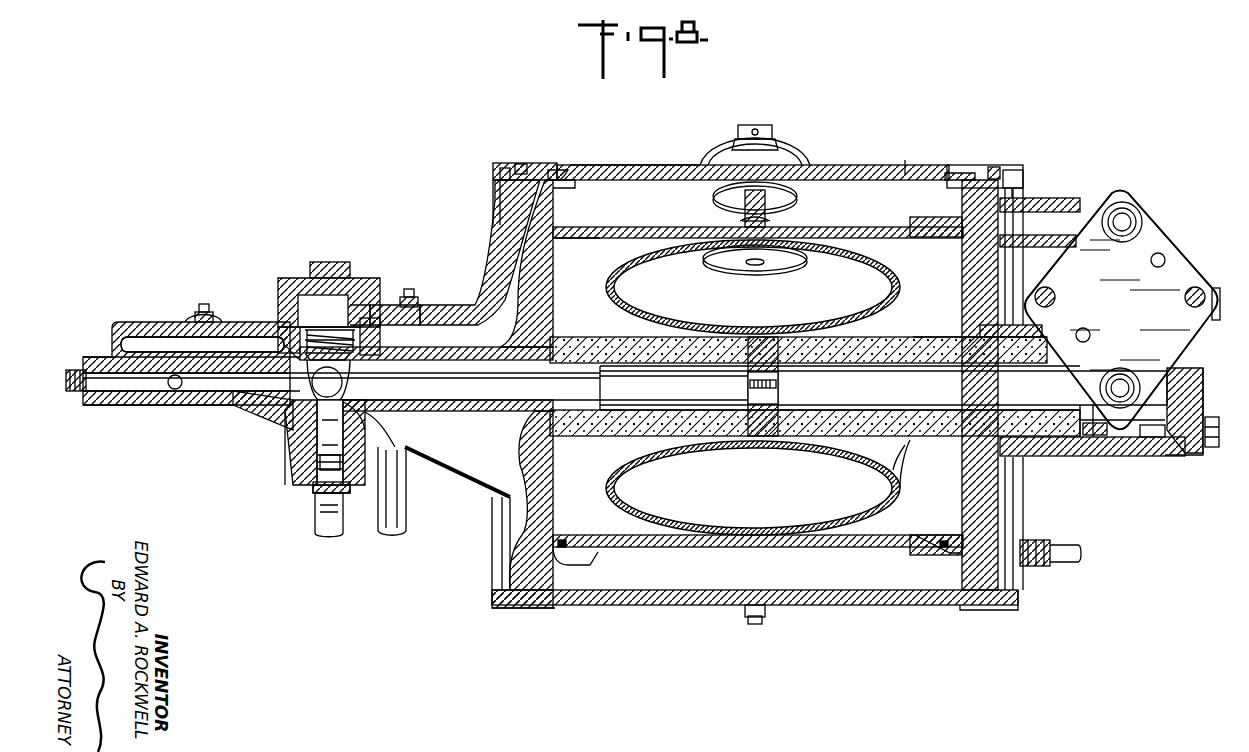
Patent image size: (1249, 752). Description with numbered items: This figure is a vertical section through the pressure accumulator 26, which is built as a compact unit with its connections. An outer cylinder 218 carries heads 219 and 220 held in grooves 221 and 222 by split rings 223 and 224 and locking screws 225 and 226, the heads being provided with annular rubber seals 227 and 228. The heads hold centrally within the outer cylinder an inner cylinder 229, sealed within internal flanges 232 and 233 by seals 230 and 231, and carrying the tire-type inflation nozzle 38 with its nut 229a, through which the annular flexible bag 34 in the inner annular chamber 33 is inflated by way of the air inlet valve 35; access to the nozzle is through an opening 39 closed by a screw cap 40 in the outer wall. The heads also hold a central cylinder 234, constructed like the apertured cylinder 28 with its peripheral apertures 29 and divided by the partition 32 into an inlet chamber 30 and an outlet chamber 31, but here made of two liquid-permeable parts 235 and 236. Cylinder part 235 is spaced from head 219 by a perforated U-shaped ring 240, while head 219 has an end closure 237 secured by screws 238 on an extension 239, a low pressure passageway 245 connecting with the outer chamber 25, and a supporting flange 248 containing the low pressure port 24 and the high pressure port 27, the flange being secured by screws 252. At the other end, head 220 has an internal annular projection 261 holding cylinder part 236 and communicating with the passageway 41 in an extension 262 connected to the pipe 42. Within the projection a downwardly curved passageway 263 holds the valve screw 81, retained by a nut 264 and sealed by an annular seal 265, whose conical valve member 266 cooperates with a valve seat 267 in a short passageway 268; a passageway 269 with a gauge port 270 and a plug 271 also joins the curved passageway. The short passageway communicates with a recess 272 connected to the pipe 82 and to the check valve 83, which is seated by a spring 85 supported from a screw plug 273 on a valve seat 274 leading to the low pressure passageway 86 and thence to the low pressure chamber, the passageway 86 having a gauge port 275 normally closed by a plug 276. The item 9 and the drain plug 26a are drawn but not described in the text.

The outlet pipe 9 is at (1050, 560).
The low pressure port 24 is at (1125, 214).
The outer chamber 25 is at (838, 176).
The pressure accumulator 26 is at (909, 165).
The drain plug 26a is at (752, 620).
The high pressure port 27 is at (1122, 378).
The cylinder 28 is at (1195, 456).
The peripheral apertures 29 is at (1128, 457).
The inlet chamber 30 is at (625, 388).
The outlet chamber 31 is at (674, 386).
The partition 32 is at (780, 382).
The inner annular chamber 33 is at (598, 242).
The inflated annulus 34 is at (893, 292).
The air inlet valve 35 is at (753, 488).
The screw-threaded nipple 38 is at (788, 196).
The opening 39 is at (775, 178).
The screw cap 40 is at (775, 138).
The passageway 41 is at (497, 400).
The pipe 42 is at (392, 528).
The valve screw 81 is at (318, 488).
The pipe 82 is at (318, 522).
The check valve 83 is at (412, 294).
The spring 85 is at (362, 300).
The low pressure passageway 86 is at (440, 325).
The outer cylinder 218 is at (618, 166).
The head 219 is at (1012, 171).
The head 220 is at (495, 553).
The groove 221 is at (963, 173).
The groove 222 is at (560, 170).
The split ring 223 is at (1018, 190).
The split ring 224 is at (508, 170).
The locking screw 225 is at (996, 167).
The locking screw 226 is at (523, 166).
The annular seal 227 is at (972, 610).
The annular seal 228 is at (520, 608).
The inner cylinder 229 is at (672, 218).
The nut 229a is at (790, 225).
The seal 230 is at (950, 552).
The seal 231 is at (562, 560).
The internal flange 232 is at (912, 546).
The internal flange 233 is at (592, 548).
The central cylinder 234 is at (921, 328).
The cylinder part 235 is at (922, 440).
The cylinder part 236 is at (578, 345).
The end closure 237 is at (1195, 388).
The screws 238 is at (1213, 416).
The extension 239 is at (1152, 457).
The perforated U-shaped ring 240 is at (1093, 457).
The low pressure passageway 245 is at (1062, 205).
The supporting flange 248 is at (1162, 236).
The screws 252 is at (1056, 298).
The internal annular projection 261 is at (572, 415).
The extension 262 is at (448, 410).
The downwardly curved passageway 263 is at (288, 443).
The nut 264 is at (312, 488).
The annular seal 265 is at (305, 458).
The conical valve member 266 is at (285, 418).
The valve seat 267 is at (350, 493).
The short passageway 268 is at (310, 388).
The passageway 269 is at (120, 392).
The port 270 is at (175, 390).
The plug 271 is at (82, 370).
The recess 272 is at (286, 334).
The screw plug 273 is at (345, 270).
The valve seat 274 is at (303, 345).
The port 275 is at (193, 320).
The plug 276 is at (206, 308).